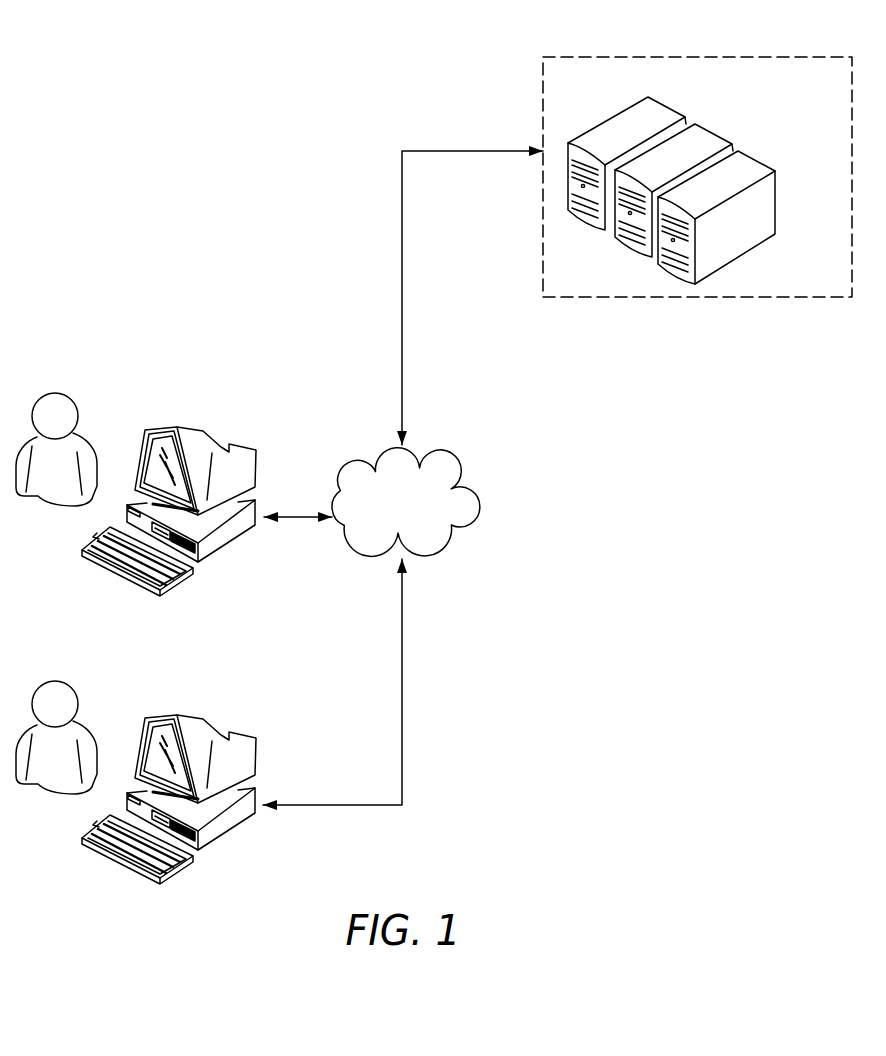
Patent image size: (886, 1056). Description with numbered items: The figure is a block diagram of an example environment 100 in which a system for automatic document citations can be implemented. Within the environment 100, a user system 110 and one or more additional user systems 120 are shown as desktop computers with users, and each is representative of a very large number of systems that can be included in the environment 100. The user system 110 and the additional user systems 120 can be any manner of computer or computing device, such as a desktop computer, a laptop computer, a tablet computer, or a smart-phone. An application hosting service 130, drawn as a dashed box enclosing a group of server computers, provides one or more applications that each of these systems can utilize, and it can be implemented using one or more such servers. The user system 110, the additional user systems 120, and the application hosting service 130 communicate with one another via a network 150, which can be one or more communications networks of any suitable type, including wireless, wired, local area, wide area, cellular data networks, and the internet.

The environment 100 is at (217, 34).
The user system 110 is at (233, 440).
The additional user system 120 is at (233, 728).
The application hosting service 130 is at (727, 57).
The network 150 is at (448, 448).